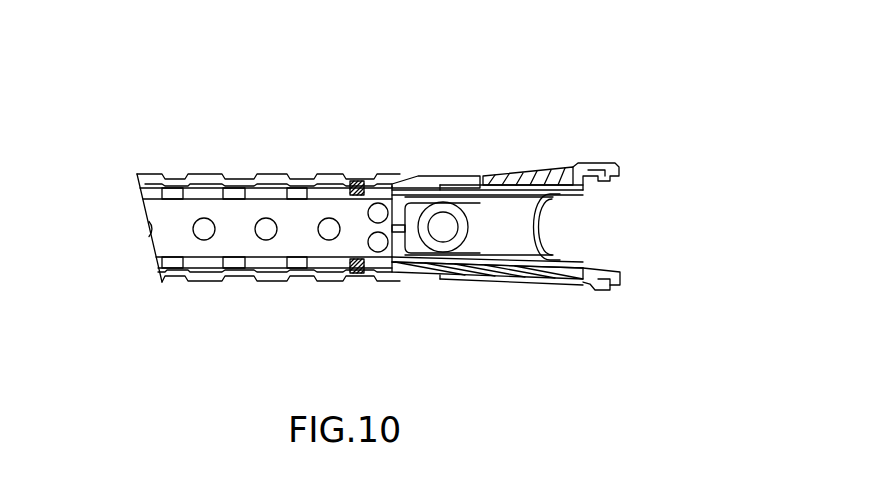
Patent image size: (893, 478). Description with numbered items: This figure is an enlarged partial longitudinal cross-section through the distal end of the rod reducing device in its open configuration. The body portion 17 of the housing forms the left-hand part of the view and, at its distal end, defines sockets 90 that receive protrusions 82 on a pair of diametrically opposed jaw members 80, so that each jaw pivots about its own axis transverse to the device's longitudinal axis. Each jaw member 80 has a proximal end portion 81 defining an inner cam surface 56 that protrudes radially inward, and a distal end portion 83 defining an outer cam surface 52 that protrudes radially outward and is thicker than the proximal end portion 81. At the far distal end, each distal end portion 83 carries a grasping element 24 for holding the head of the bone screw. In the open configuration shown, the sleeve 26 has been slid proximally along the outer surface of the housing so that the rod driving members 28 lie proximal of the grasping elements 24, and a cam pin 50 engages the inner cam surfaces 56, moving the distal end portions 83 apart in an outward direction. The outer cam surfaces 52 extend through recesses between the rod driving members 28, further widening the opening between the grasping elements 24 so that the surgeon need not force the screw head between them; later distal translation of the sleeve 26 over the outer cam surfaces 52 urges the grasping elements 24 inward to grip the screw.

The body portion 17 is at (158, 217).
The sleeve 26 is at (232, 175).
The protrusions 82 is at (357, 182).
The sockets 90 is at (372, 206).
The proximal end portion 81 is at (394, 190).
The jaw members 80 is at (478, 190).
The outer cam surface 52 is at (523, 186).
The distal end portion 83 is at (558, 186).
The grasping element 24 is at (620, 172).
The rod driving members 28 is at (556, 248).
The cam pin 50 is at (553, 207).
The inner cam surface 56 is at (420, 204).